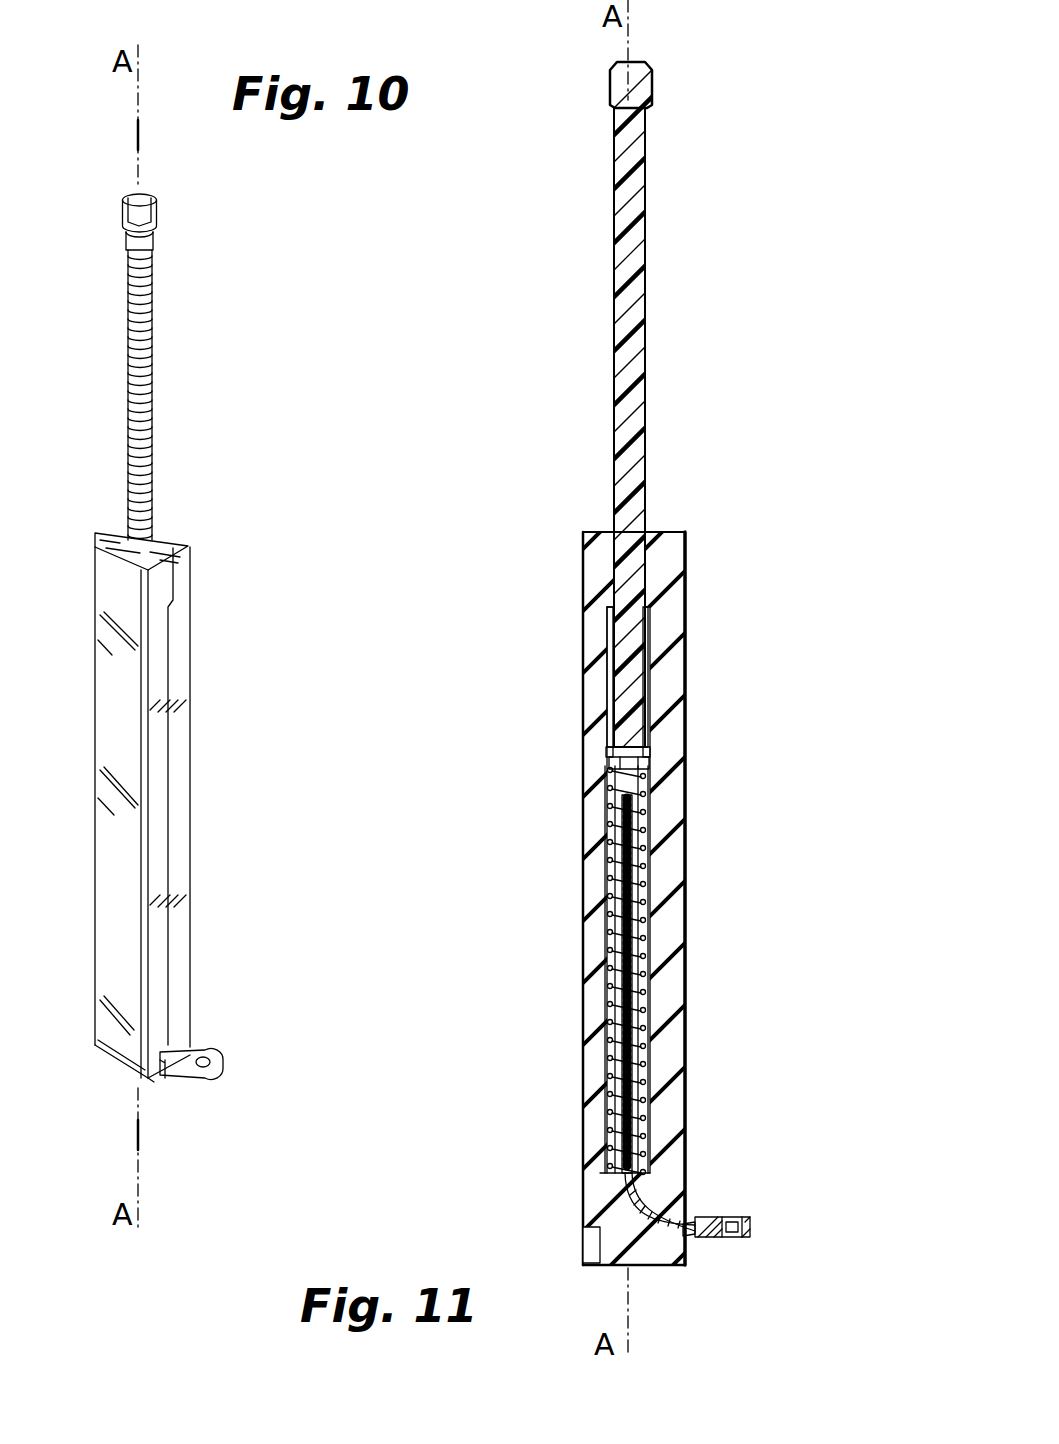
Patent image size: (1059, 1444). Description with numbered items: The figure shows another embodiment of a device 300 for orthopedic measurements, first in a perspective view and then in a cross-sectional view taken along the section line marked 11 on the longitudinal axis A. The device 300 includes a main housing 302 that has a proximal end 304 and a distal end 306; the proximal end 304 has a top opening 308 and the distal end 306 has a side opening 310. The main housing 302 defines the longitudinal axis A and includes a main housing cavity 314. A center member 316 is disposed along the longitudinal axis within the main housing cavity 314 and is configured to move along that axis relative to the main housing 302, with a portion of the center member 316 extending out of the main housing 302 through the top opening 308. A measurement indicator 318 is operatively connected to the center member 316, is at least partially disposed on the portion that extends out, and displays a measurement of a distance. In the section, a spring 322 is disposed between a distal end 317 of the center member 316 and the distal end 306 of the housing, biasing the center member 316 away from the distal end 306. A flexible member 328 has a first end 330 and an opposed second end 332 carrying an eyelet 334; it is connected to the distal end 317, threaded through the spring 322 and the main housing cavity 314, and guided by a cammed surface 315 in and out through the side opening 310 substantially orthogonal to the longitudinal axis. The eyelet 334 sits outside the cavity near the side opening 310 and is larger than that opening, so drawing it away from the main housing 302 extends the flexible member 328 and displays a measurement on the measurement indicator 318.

In FIG. 10, the section line 11- 11 is at (134, 131).
In FIG. 10, the device for orthopedic measurements 300 is at (266, 370).
In FIG. 11, the device for orthopedic measurements 300 is at (749, 266).
In FIG. 10, the main housing 302 is at (192, 763).
In FIG. 11, the main housing 302 is at (686, 903).
In FIG. 10, the proximal end 304 is at (190, 543).
In FIG. 10, the distal end 306 is at (110, 1066).
In FIG. 11, the distal end 306 is at (656, 1268).
In FIG. 10, the top opening 308 is at (126, 533).
In FIG. 11, the top opening 308 is at (606, 524).
In FIG. 10, the side opening 310 is at (148, 1082).
In FIG. 11, the side opening 310 is at (653, 1208).
In FIG. 11, the main housing cavity 314 is at (603, 625).
In FIG. 11, the cammed surface 315 is at (613, 1264).
In FIG. 10, the center member 316 is at (152, 350).
In FIG. 11, the center member 316 is at (613, 297).
In FIG. 11, the distal end of center member 317 is at (605, 742).
In FIG. 10, the measurement indicator 318 is at (152, 415).
In FIG. 11, the spring 322 is at (604, 896).
In FIG. 10, the flexible member 328 is at (182, 1050).
In FIG. 11, the flexible member 328 is at (605, 1032).
In FIG. 11, the first end 330 is at (607, 806).
In FIG. 11, the second end 332 is at (684, 1238).
In FIG. 11, the eyelet 334 is at (756, 1226).